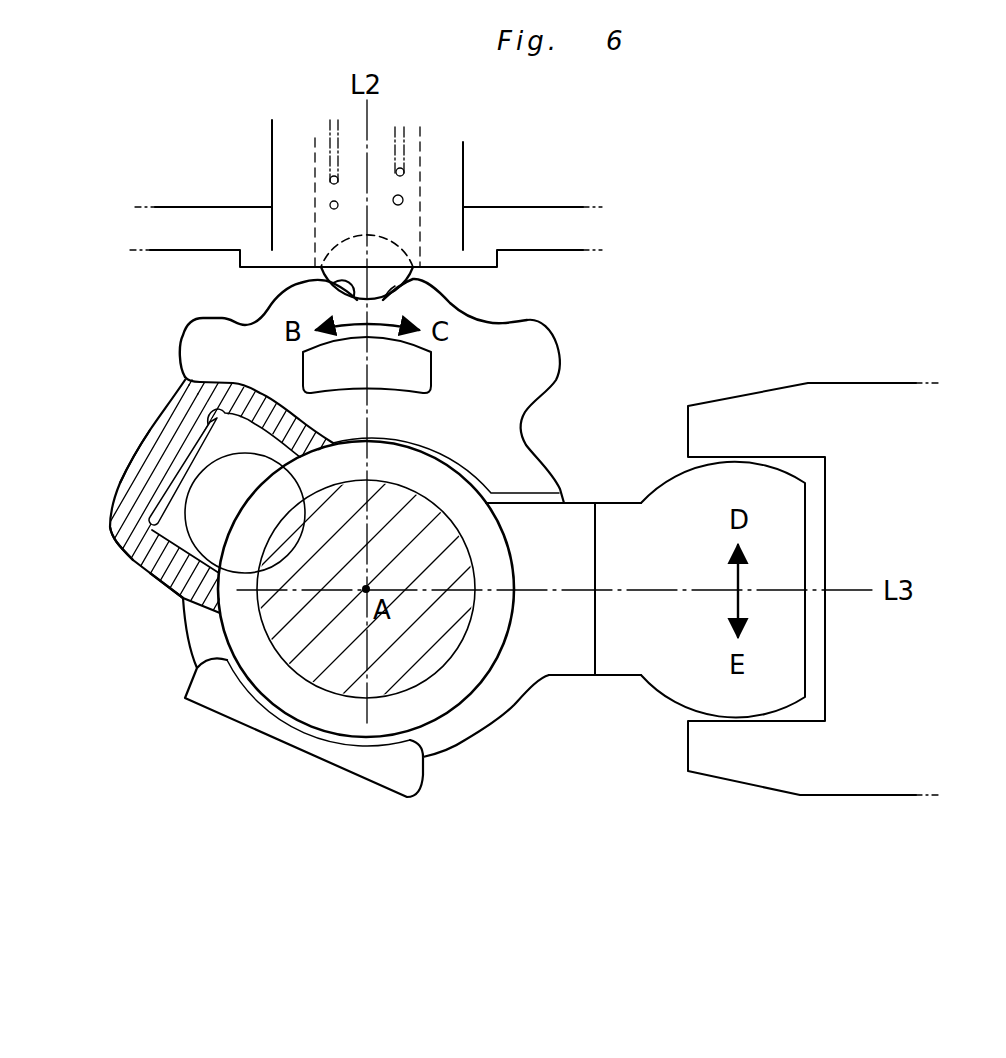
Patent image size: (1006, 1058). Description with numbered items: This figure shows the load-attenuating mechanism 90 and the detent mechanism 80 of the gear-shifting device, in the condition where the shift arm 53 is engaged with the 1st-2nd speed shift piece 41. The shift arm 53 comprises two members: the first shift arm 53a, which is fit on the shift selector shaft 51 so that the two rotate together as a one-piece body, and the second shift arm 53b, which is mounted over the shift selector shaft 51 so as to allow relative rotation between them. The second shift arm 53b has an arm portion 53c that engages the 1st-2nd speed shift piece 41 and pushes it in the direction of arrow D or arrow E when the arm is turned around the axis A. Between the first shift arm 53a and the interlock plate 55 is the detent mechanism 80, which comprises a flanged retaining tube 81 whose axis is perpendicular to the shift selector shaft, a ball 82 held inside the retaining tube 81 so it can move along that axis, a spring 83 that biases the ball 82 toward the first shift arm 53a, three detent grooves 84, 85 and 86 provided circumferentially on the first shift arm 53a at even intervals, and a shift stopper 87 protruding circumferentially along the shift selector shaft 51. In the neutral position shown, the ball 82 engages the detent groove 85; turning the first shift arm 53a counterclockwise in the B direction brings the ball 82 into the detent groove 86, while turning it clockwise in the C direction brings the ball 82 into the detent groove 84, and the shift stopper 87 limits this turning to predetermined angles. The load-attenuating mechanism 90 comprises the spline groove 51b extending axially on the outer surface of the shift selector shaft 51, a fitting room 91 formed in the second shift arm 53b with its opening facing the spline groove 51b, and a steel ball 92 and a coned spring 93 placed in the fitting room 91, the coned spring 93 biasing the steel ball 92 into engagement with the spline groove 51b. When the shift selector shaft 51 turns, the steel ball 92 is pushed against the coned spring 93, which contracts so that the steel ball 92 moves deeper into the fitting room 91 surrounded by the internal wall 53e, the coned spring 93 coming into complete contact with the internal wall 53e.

The 1st-2nd speed shift piece 41 is at (809, 382).
The shift selector shaft 51 is at (317, 668).
The spline groove 51b is at (297, 545).
The shift arm 53 is at (510, 720).
The first shift arm 53a is at (509, 413).
The second shift arm 53b is at (552, 656).
The arm portion 53c is at (785, 674).
The internal wall 53e is at (187, 457).
The interlock plate 55 is at (223, 222).
The detent mechanism 80 is at (470, 160).
The flanged retaining tube 81 is at (452, 192).
The ball 82 is at (400, 275).
The spring 83 is at (412, 170).
The detent groove 84 is at (258, 318).
The detent groove 85 is at (325, 280).
The detent groove 86 is at (495, 323).
The shift stopper 87 is at (430, 363).
The load-attenuating mechanism 90 is at (152, 501).
The fitting room 91 is at (133, 560).
The steel ball 92 is at (168, 585).
The coned spring 93 is at (183, 487).